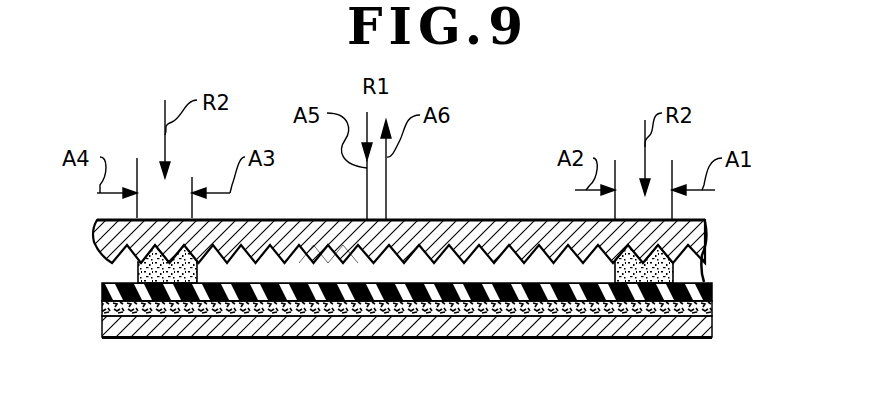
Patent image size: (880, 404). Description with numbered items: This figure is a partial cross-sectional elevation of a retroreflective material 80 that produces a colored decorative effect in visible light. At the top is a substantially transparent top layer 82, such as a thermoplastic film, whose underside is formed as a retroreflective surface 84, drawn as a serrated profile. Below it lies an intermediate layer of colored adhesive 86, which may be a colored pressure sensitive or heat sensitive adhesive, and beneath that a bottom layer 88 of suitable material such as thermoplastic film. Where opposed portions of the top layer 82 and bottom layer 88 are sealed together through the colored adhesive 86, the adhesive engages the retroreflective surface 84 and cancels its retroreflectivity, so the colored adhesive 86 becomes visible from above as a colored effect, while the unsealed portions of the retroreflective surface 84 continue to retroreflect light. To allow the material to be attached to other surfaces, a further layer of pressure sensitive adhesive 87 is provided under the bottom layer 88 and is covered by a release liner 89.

The retroreflective material 80 is at (493, 202).
The top layer 82 is at (707, 228).
The retroreflective surface 84 is at (323, 256).
The colored adhesive 86 is at (138, 270).
The pressure sensitive adhesive 87 is at (712, 307).
The bottom layer 88 is at (712, 290).
The release liner 89 is at (713, 338).